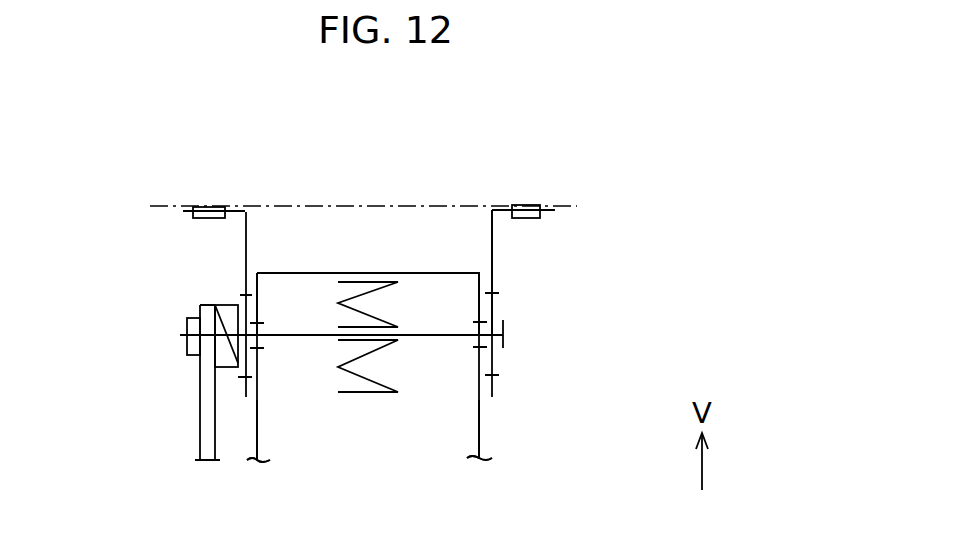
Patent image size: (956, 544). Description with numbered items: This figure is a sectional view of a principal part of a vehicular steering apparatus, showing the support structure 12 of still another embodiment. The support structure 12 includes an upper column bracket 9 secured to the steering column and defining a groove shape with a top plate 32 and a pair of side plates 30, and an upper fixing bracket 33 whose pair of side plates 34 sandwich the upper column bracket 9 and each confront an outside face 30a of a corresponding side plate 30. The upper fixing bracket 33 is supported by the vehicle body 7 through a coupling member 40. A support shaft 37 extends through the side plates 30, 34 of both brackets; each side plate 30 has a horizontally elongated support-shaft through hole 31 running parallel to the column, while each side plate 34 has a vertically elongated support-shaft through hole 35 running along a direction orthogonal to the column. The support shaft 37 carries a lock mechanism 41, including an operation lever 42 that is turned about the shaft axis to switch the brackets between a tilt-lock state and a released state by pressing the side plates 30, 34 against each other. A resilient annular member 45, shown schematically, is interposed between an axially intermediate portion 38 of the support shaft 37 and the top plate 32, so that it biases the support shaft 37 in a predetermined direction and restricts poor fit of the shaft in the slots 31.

The vehicle body 7 is at (568, 204).
The upper column bracket 9 is at (489, 439).
The support structure 12 is at (603, 256).
The side plates 30 is at (258, 430).
The outside face 30a is at (257, 418).
The support-shaft through hole 31 is at (259, 341).
The top plate 32 is at (447, 273).
The upper fixing bracket 33 is at (494, 245).
The side plates 34 is at (243, 242).
The support-shaft through hole 35 is at (240, 295).
The support shaft 37 is at (283, 331).
The axially intermediate portion 38 is at (322, 335).
The coupling member 40 is at (210, 210).
The lock mechanism 41 is at (187, 367).
The operation lever 42 is at (199, 420).
The annular member 45 is at (392, 286).